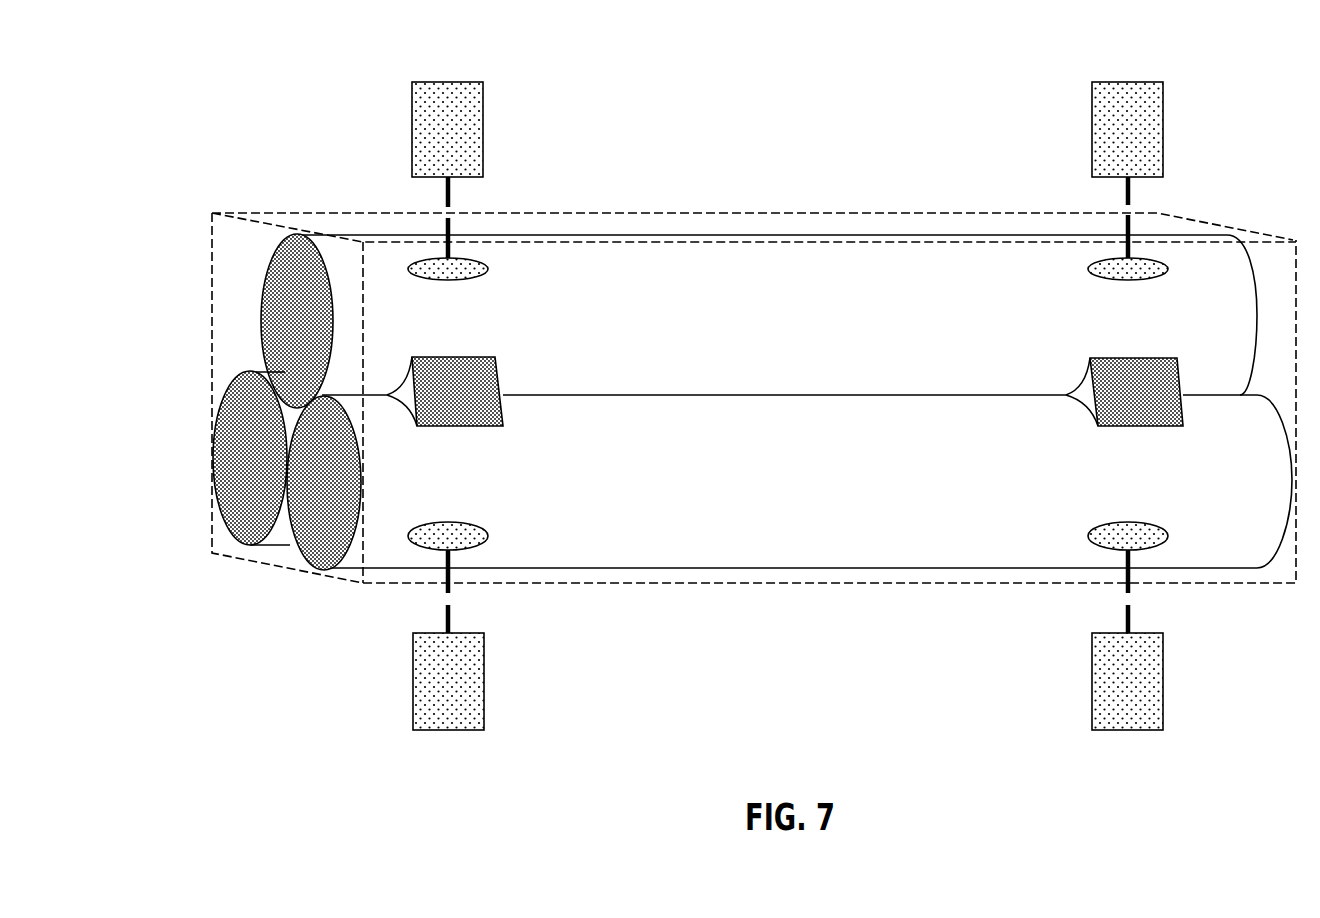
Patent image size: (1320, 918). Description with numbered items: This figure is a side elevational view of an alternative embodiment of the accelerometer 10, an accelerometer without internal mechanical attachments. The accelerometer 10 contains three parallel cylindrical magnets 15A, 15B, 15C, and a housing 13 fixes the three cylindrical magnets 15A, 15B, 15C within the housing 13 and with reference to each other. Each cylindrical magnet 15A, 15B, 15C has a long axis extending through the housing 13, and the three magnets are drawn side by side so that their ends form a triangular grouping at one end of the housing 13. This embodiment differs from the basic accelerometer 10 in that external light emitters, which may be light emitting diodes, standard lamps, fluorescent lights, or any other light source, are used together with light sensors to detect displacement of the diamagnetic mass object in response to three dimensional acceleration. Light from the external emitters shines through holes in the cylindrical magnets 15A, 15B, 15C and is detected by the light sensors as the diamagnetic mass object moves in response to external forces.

The accelerometer 10 is at (823, 47).
The housing 13 is at (932, 213).
The cylindrical magnet 15A is at (228, 518).
The cylindrical magnet 15B is at (837, 292).
The cylindrical magnet 15C is at (837, 461).